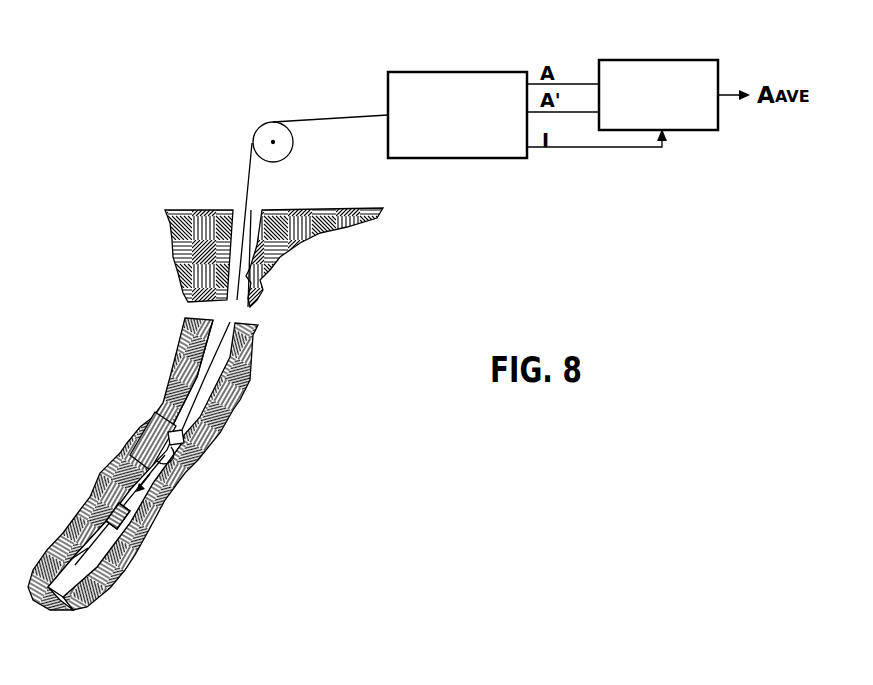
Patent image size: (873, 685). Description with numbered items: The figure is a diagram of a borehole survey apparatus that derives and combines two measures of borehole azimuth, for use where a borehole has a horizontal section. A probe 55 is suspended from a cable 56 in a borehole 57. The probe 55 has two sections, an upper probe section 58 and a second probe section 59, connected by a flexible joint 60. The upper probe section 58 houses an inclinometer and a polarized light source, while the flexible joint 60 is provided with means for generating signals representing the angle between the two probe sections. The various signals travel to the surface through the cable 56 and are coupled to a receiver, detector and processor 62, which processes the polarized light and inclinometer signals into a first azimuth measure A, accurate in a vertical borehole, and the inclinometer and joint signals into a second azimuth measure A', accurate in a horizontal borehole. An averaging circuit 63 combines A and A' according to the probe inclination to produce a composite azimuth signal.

The probe 55 is at (83, 481).
The cable 56 is at (217, 358).
The borehole 57 is at (262, 286).
The upper probe section 58 is at (137, 433).
The probe section 59 is at (105, 583).
The flexible joint 60 is at (152, 527).
The receiver, detector and processor 62 is at (433, 72).
The averaging circuit 63 is at (617, 62).